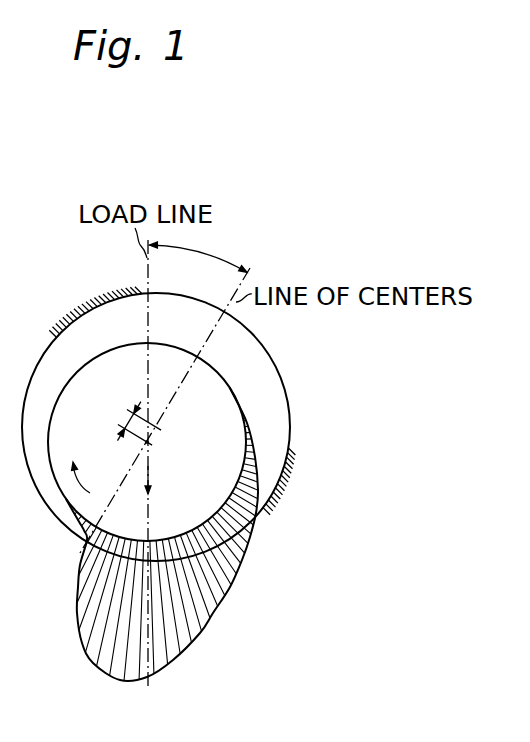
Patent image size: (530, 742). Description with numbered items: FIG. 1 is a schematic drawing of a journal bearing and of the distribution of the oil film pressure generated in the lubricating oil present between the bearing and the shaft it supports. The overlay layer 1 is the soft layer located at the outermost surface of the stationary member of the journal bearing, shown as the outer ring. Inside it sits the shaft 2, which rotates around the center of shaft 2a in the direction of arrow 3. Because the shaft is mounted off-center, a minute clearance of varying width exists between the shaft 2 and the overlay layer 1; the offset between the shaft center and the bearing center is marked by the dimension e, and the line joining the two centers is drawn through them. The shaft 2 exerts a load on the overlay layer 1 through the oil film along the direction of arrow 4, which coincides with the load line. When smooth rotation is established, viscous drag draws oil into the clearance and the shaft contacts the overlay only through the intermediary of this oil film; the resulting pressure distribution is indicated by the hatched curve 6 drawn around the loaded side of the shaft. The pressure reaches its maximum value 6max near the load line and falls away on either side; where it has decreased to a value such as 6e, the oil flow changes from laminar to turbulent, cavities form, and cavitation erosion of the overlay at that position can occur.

The overlay layer 1 is at (291, 413).
The shaft 2 is at (227, 390).
The center of shaft 2a is at (149, 443).
The arrow 3 is at (82, 484).
The arrow 4 is at (150, 474).
The curve 6 is at (222, 608).
The oil film pressure 6e is at (93, 658).
The maximum value 6max is at (145, 683).
The eccentricity e is at (134, 420).